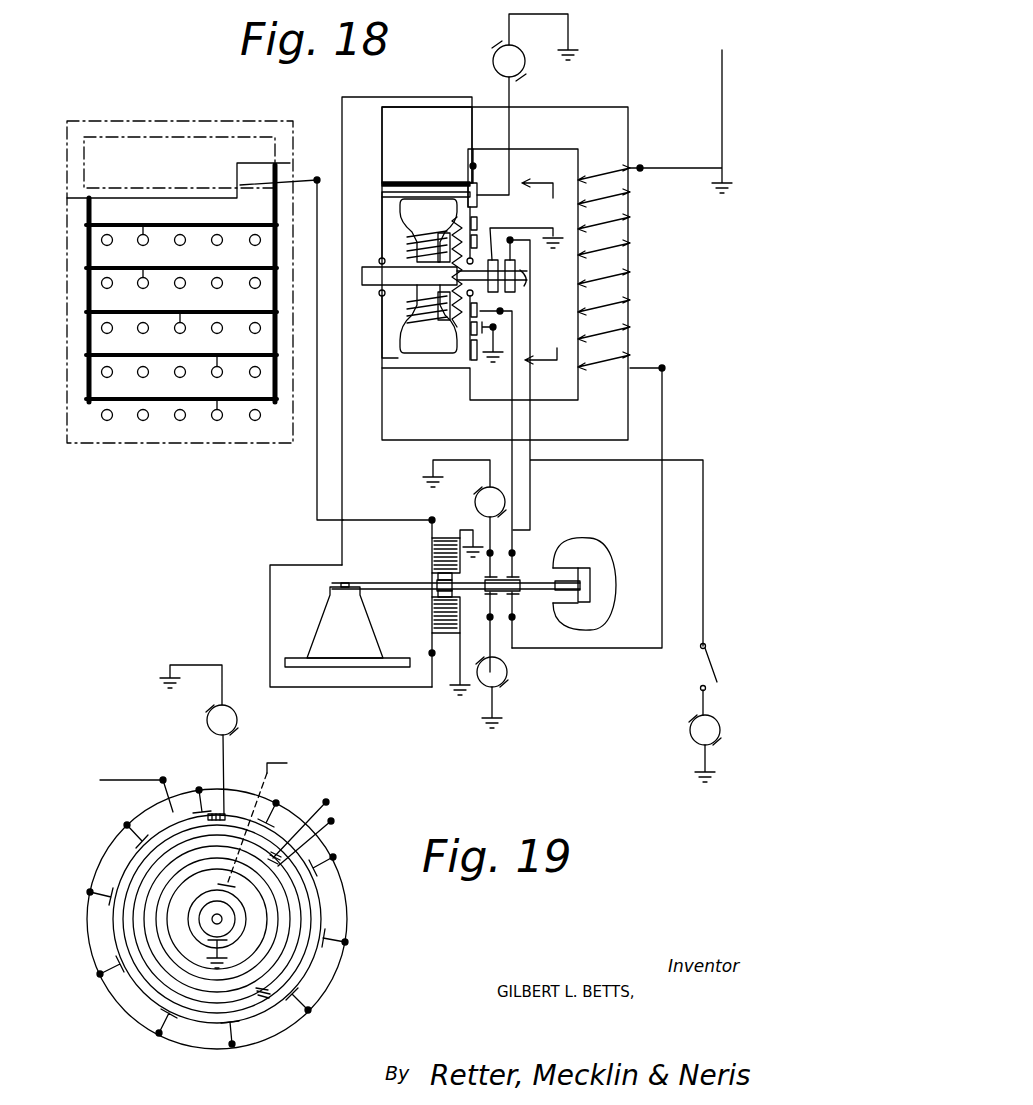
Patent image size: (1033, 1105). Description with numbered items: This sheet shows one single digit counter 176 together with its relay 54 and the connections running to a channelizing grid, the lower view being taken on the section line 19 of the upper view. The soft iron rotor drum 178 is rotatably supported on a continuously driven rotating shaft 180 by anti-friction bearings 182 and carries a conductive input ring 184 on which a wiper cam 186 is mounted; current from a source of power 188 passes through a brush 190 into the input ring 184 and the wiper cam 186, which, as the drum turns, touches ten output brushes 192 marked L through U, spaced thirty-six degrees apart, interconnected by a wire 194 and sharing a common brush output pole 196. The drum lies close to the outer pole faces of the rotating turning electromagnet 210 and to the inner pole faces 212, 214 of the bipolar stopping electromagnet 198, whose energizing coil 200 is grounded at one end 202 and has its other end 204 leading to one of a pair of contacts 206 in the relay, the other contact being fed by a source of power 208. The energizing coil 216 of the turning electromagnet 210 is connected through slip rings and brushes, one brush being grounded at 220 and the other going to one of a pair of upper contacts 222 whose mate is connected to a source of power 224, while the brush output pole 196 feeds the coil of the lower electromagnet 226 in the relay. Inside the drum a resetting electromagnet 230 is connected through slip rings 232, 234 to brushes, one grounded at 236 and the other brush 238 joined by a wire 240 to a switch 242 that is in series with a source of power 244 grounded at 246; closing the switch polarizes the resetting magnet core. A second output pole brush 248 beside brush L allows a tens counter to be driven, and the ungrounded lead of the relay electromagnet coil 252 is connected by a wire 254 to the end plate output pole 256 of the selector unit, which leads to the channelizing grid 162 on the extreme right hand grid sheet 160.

In FIG. 18, the section line 19— 19 is at (551, 273).
In FIG. 18, the relay 54 is at (328, 622).
In FIG. 18, the grid sheet 160 is at (82, 398).
In FIG. 18, the channelizing grid 162 is at (86, 263).
In FIG. 18, the single digit counter 176 is at (600, 99).
In FIG. 19, the single digit counter 176 is at (88, 928).
In FIG. 18, the rotor drum 178 is at (402, 196).
In FIG. 18, the rotating shaft 180 is at (444, 276).
In FIG. 18, the anti-friction bearings 182 is at (490, 232).
In FIG. 18, the input ring 184 is at (470, 352).
In FIG. 19, the input ring 184 is at (325, 902).
In FIG. 18, the wiper cam 186 is at (470, 186).
In FIG. 19, the wiper cam 186 is at (237, 812).
In FIG. 18, the source of power 188 is at (497, 261).
In FIG. 19, the source of power 188 is at (207, 720).
In FIG. 18, the brush 190 is at (515, 197).
In FIG. 19, the brush 190 is at (216, 808).
In FIG. 18, the output brushes 192 is at (473, 163).
In FIG. 19, the output brushes 192 is at (113, 835).
In FIG. 19, the wire 194 is at (329, 990).
In FIG. 18, the brush output pole 196 is at (477, 183).
In FIG. 19, the brush output pole 196 is at (326, 802).
In FIG. 18, the stopping electromagnet 198 is at (617, 285).
In FIG. 18, the energizing coil 200 is at (615, 247).
In FIG. 18, the ground end 202 is at (712, 195).
In FIG. 18, the other end of coil 204 is at (653, 367).
In FIG. 18, the pair of contacts 206 is at (514, 596).
In FIG. 18, the source of power 208 is at (497, 675).
In FIG. 18, the turning electromagnet 210 is at (417, 225).
In FIG. 18, the inner pole face 212 is at (397, 117).
In FIG. 18, the inner pole face 214 is at (393, 386).
In FIG. 18, the energizing coil 216 is at (435, 305).
In FIG. 18, the ground 220 is at (558, 228).
In FIG. 19, the ground 220 is at (207, 960).
In FIG. 18, the pair of upper contacts 222 is at (515, 568).
In FIG. 19, the pair of upper contacts 222 is at (277, 822).
In FIG. 18, the source of power 224 is at (482, 506).
In FIG. 18, the lower electromagnet 226 is at (432, 612).
In FIG. 18, the resetting electromagnet 230 is at (406, 331).
In FIG. 18, the slip ring 232 is at (503, 320).
In FIG. 19, the slip ring 232 is at (130, 948).
In FIG. 18, the slip ring 234 is at (495, 333).
In FIG. 19, the slip ring 234 is at (283, 922).
In FIG. 18, the ground 236 is at (495, 368).
In FIG. 19, the ground 236 is at (262, 998).
In FIG. 18, the brush 238 is at (482, 313).
In FIG. 18, the wire 240 is at (703, 489).
In FIG. 19, the wire 240 is at (331, 821).
In FIG. 18, the switch 242 is at (700, 658).
In FIG. 18, the source of power 244 is at (690, 732).
In FIG. 18, the ground 246 is at (698, 780).
In FIG. 19, the second output pole brush 248 is at (172, 801).
In FIG. 18, the electromagnet coil 252 is at (432, 555).
In FIG. 18, the wire 254 is at (400, 506).
In FIG. 18, the end plate output pole 256 is at (317, 178).